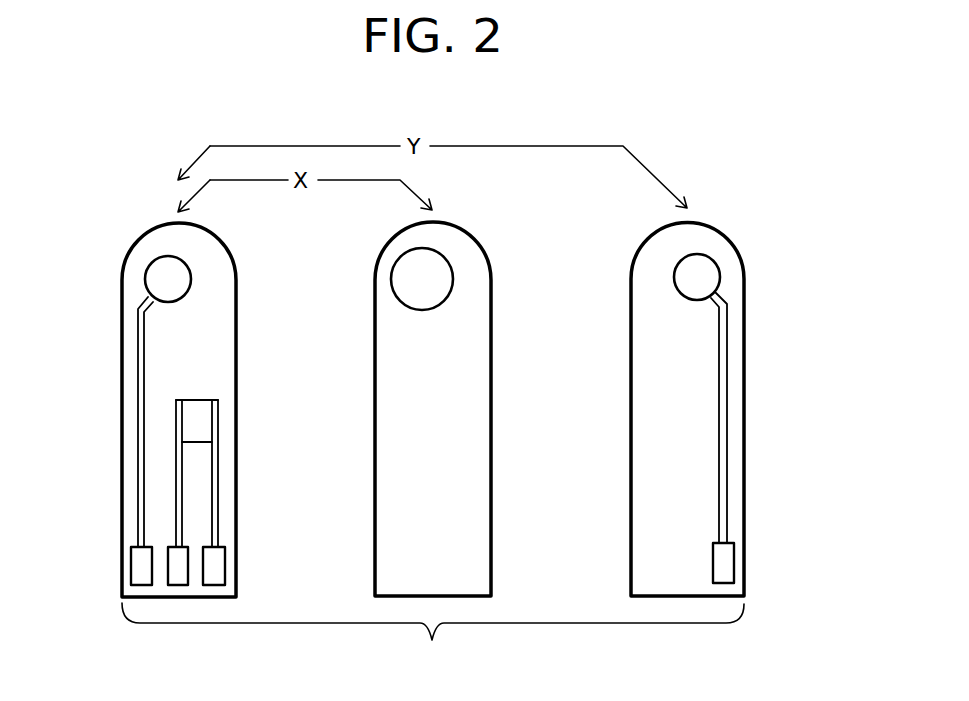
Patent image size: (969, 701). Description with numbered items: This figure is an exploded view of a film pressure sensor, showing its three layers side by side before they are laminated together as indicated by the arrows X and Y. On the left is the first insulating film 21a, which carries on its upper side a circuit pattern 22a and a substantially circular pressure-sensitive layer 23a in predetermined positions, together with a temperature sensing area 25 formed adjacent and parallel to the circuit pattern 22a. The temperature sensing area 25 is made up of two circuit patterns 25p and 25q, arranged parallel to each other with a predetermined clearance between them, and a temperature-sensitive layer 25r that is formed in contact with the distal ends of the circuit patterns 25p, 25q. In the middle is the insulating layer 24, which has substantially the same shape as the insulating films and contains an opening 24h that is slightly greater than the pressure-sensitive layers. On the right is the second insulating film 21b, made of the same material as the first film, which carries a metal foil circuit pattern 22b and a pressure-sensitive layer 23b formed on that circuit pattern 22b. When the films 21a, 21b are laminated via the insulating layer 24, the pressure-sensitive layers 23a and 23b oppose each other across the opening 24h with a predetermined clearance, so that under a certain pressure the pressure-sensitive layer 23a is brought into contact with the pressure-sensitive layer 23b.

The first insulating film 21a is at (220, 373).
The second insulating film 21b is at (646, 371).
The circuit pattern 22a is at (138, 366).
The circuit pattern 22b is at (728, 363).
The pressure-sensitive layer 23a is at (157, 279).
The pressure-sensitive layer 23b is at (708, 277).
The insulating layer 24 is at (470, 472).
The opening 24h is at (449, 270).
The temperature sensing area 25 is at (241, 428).
The circuit pattern 25p is at (187, 510).
The circuit pattern 25q is at (219, 474).
The temperature-sensitive layer 25r is at (197, 424).